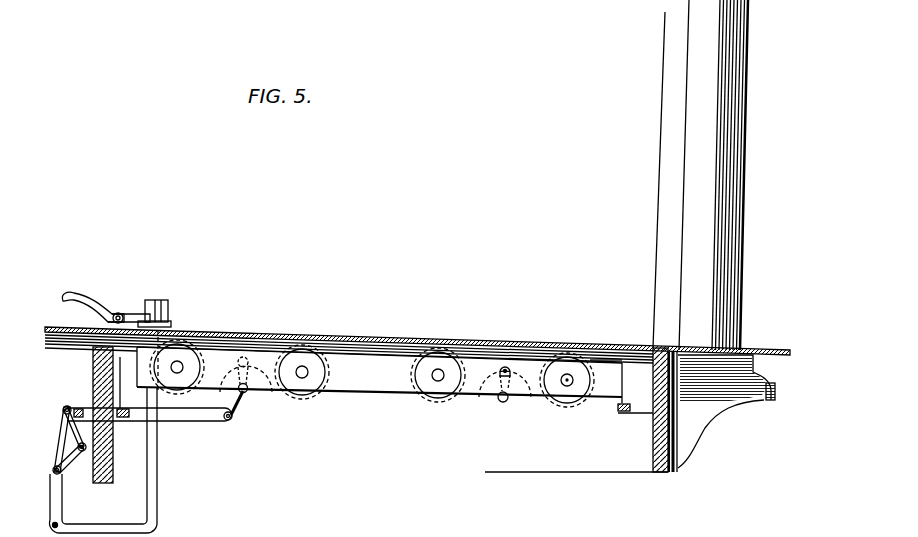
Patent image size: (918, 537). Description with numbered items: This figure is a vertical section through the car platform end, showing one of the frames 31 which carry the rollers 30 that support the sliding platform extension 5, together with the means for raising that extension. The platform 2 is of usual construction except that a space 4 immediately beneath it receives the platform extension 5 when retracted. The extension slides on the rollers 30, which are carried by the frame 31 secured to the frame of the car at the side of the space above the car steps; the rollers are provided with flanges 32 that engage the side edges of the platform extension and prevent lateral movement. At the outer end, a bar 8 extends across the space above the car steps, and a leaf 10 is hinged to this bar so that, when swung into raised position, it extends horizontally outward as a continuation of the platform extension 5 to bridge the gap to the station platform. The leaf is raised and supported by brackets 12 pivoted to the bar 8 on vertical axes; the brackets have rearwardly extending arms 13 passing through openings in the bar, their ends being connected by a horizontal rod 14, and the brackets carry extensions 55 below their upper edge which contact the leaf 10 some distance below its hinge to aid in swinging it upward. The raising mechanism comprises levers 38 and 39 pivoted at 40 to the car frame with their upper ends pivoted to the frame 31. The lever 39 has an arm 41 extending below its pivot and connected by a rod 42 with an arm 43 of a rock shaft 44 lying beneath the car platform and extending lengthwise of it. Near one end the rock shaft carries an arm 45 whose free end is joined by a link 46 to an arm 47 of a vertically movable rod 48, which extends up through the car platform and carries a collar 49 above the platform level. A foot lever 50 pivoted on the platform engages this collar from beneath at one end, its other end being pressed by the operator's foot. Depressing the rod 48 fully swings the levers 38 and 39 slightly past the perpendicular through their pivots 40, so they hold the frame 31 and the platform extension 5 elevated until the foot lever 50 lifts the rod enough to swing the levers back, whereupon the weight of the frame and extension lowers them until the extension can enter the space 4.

The platform 2 is at (73, 325).
The space 4 is at (75, 338).
The platform extension 5 is at (357, 337).
The bar 8 is at (652, 455).
The leaf 10 is at (738, 352).
The brackets 12 is at (708, 405).
The rearwardly extending arms 13 is at (645, 410).
The horizontal rod 14 is at (622, 418).
The rollers 30 is at (183, 347).
The frames 31 is at (383, 388).
The flanges 32 is at (222, 386).
The lever 38 is at (507, 405).
The lever 39 is at (248, 392).
The pivot 40 is at (243, 383).
The arm 41 is at (240, 413).
The rod 42 is at (188, 422).
The arm 43 is at (72, 430).
The rock shaft 44 is at (110, 447).
The arm 45 is at (71, 463).
The link 46 is at (62, 510).
The arm 47 is at (118, 528).
The vertically movable rod 48 is at (158, 473).
The collar 49 is at (169, 320).
The foot lever 50 is at (98, 308).
The extensions 55 is at (771, 400).